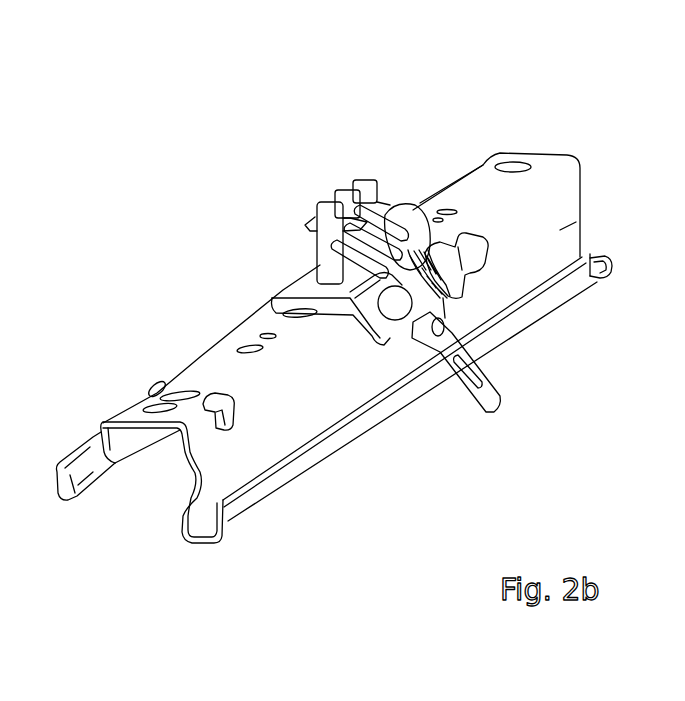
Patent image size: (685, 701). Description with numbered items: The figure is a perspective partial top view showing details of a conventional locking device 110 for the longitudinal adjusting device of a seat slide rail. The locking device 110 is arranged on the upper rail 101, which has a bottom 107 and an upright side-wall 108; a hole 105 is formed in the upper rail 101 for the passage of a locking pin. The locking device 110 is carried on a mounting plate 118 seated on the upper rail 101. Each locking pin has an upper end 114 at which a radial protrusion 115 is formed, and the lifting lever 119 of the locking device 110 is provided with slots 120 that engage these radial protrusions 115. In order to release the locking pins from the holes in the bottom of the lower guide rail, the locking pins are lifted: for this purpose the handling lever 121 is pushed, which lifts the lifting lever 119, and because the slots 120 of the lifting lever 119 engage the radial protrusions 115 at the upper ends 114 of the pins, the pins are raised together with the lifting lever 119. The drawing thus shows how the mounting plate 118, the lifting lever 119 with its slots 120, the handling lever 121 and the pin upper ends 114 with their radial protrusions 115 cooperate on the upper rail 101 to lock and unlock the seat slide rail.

The upper rail 101 is at (538, 126).
The hole in upper rail 105 is at (452, 208).
The bottom of upper rail 107 is at (562, 170).
The side-wall of upper rail 108 is at (567, 218).
The locking device 110 is at (326, 130).
The upper end of locking pin 114 is at (357, 187).
The radial protrusion of locking pin 115 is at (313, 219).
The mounting plate 118 is at (300, 292).
The lifting lever 119 is at (407, 233).
The slot in lifting lever 120 is at (387, 215).
The handling lever 121 is at (448, 333).